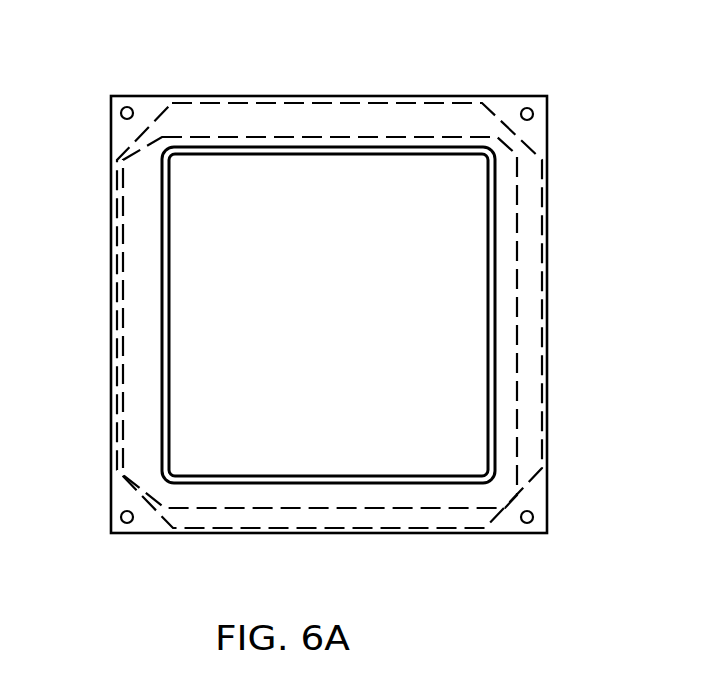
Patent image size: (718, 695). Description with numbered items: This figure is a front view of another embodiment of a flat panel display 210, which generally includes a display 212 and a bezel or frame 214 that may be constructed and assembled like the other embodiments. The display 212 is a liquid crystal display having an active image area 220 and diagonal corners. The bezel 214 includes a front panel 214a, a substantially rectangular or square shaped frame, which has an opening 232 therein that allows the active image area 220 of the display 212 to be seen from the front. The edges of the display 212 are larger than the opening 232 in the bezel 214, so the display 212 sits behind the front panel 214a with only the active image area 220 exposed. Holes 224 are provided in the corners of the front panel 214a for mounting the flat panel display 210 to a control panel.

The flat panel display 210 is at (598, 91).
The display 212 is at (417, 536).
The bezel 214 is at (551, 286).
The front panel 214a is at (127, 402).
The active image area 220 is at (488, 373).
The holes 224 is at (133, 107).
The opening 232 is at (305, 483).